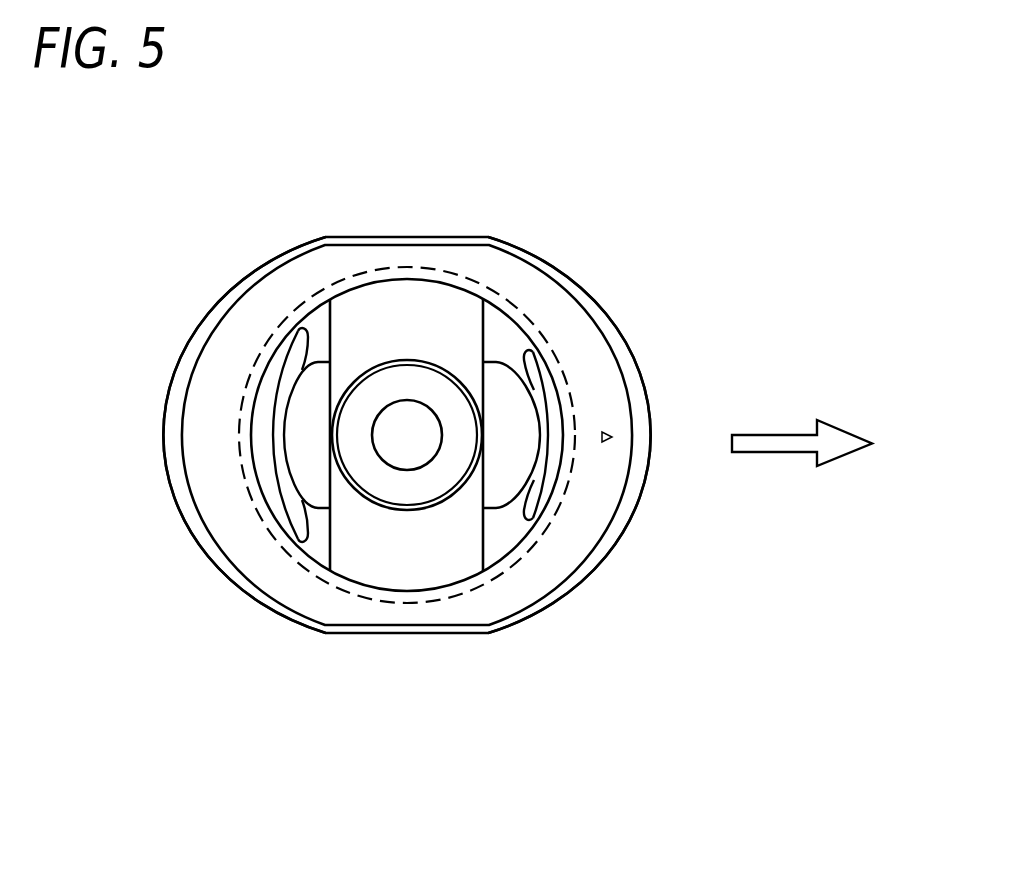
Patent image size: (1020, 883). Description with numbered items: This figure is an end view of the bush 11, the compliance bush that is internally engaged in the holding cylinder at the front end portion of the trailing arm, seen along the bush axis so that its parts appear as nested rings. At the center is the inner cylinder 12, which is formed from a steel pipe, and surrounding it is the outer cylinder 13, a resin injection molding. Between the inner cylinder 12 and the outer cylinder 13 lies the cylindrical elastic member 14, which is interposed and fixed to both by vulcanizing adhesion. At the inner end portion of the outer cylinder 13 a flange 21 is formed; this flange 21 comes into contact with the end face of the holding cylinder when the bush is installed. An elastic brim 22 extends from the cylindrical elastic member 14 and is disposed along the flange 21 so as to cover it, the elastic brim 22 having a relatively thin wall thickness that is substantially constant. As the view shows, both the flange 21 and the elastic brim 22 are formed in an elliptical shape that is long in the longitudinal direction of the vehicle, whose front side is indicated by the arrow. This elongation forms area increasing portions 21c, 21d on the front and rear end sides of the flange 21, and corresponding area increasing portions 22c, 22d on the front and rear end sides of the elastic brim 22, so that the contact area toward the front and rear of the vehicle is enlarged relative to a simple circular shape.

The bush 11 is at (240, 225).
The inner cylinder 12 is at (392, 490).
The outer cylinder 13 is at (479, 593).
The cylindrical elastic member 14 is at (422, 555).
The flange 21 is at (550, 257).
The area increasing portion 21c is at (617, 342).
The area increasing portion 21d is at (188, 353).
The elastic brim 22 is at (475, 247).
The area increasing portion 22c is at (598, 490).
The area increasing portion 22d is at (208, 482).